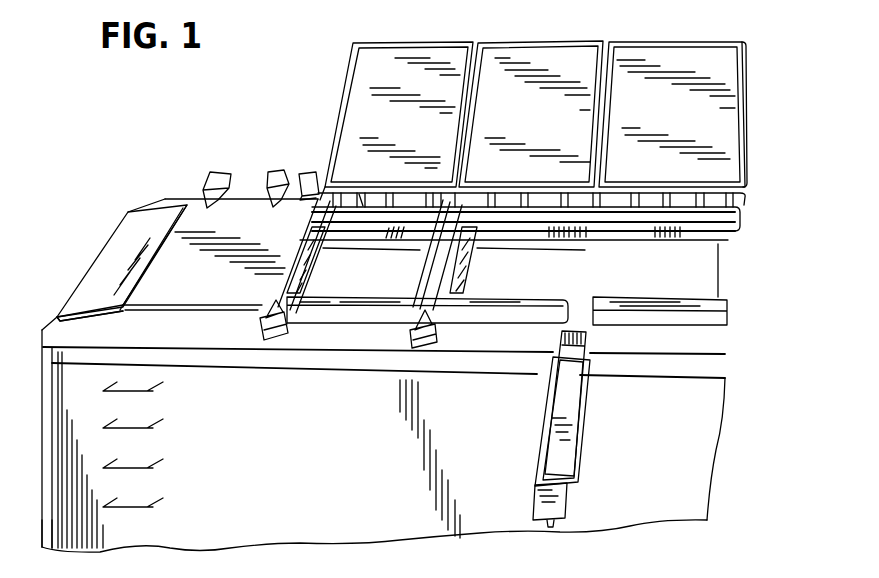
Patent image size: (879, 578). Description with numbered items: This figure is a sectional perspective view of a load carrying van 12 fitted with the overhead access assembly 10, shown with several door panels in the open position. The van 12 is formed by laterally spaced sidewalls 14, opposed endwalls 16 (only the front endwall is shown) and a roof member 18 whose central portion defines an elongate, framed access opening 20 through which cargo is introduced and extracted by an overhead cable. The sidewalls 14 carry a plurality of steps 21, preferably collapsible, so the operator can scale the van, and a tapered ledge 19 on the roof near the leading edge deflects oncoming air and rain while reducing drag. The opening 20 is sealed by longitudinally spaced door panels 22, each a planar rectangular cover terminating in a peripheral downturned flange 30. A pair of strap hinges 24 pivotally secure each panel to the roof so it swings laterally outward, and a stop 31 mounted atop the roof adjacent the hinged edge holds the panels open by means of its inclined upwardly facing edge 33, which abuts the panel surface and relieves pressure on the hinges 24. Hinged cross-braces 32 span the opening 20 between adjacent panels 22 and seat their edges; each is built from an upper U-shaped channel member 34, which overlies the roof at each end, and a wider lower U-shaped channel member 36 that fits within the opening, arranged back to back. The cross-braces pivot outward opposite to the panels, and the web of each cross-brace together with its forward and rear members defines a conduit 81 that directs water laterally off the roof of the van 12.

The overhead access assembly 10 is at (333, 63).
The load carrying van 12 is at (31, 470).
The sidewalls 14 is at (696, 283).
The endwalls 16 is at (58, 300).
The roof member 18 is at (166, 200).
The tapered ledge 19 is at (112, 272).
The access opening 20 is at (632, 292).
The steps 21 is at (144, 391).
The door panels 22 is at (418, 133).
The strap hinges 24 is at (228, 198).
The peripheral downturned flange 30 is at (746, 98).
The stop 31 is at (302, 172).
The hinged cross-braces 32 is at (335, 278).
The inclined upwardly facing edge 33 is at (272, 175).
The upper U-shaped channel member 34 is at (554, 503).
The lower U-shaped channel member 36 is at (567, 453).
The conduit 81 is at (432, 290).